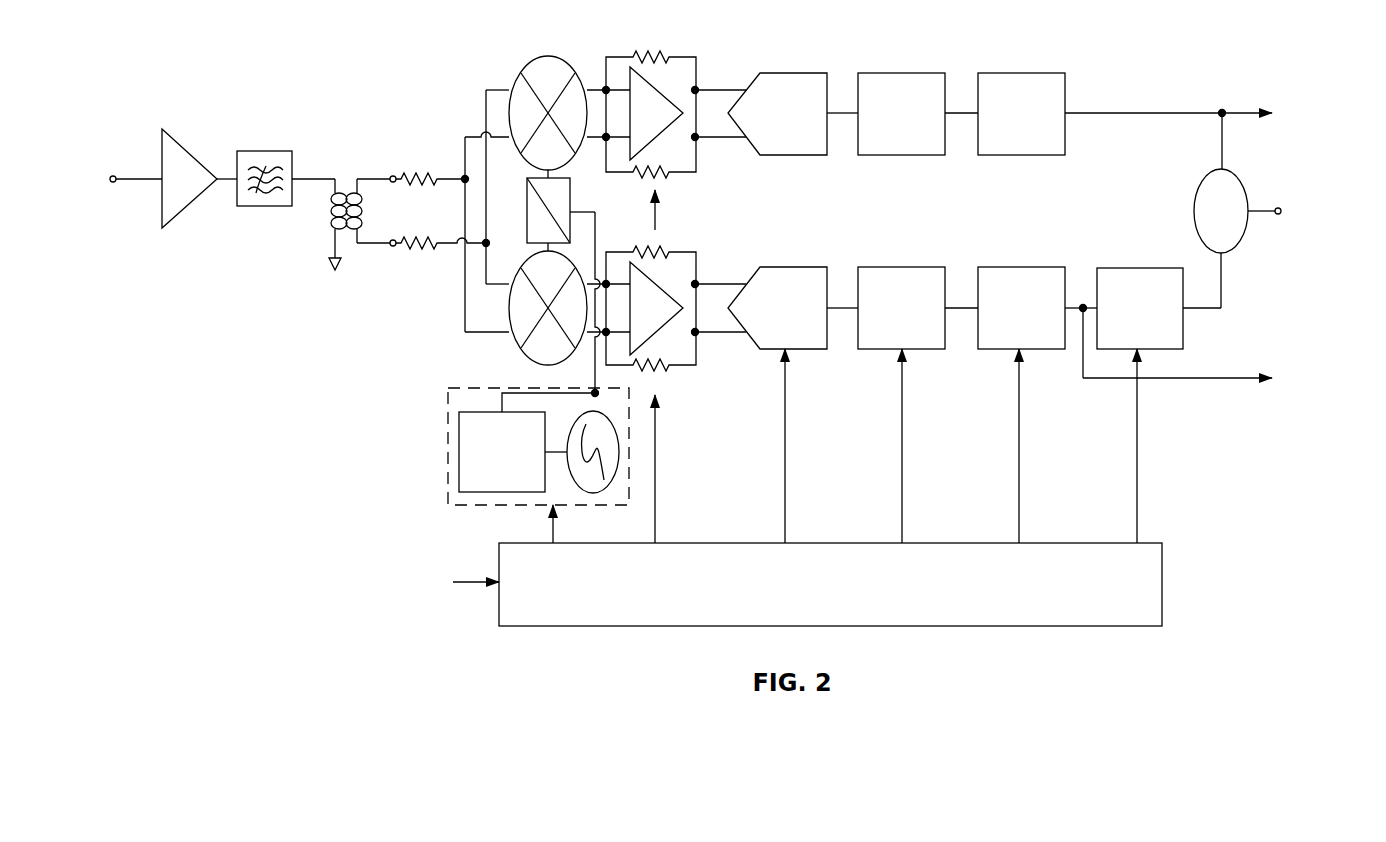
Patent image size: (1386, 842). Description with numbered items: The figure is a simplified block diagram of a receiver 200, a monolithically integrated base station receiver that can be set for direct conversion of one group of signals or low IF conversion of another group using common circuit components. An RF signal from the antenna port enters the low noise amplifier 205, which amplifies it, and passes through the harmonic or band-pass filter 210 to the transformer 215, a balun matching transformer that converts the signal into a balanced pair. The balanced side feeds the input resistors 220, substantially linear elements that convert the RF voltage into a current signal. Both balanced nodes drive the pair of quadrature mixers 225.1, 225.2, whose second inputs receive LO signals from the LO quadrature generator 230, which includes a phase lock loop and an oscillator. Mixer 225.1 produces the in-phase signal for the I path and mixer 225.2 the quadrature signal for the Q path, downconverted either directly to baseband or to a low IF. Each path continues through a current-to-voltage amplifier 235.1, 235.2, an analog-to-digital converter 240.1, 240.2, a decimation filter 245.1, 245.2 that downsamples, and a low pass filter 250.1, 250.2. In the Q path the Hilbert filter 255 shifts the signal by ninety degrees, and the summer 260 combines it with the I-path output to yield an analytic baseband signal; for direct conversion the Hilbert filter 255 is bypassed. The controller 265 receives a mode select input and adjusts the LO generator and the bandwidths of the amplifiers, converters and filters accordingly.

The receiver 200 is at (743, 363).
The low noise amplifier 205 is at (178, 141).
The harmonic or band-pass filter 210 is at (270, 152).
The transformer 215 is at (327, 238).
The input resistors 220 is at (410, 250).
The quadrature mixer 225.1 is at (522, 80).
The quadrature mixer 225.2 is at (513, 320).
The LO quadrature generator 230 is at (448, 400).
The current-to-voltage amplifier 235.1 is at (620, 57).
The current-to-voltage amplifier 235.2 is at (668, 342).
The analog-to-digital converter 240.1 is at (780, 73).
The analog-to-digital converter 240.2 is at (800, 349).
The decimation filter 245.1 is at (900, 73).
The decimation filter 245.2 is at (915, 349).
The low pass filter 250.1 is at (1012, 73).
The low pass filter 250.2 is at (1040, 349).
The Hilbert filter 255 is at (1175, 323).
The summer 260 is at (1240, 218).
The controller 265 is at (1162, 557).